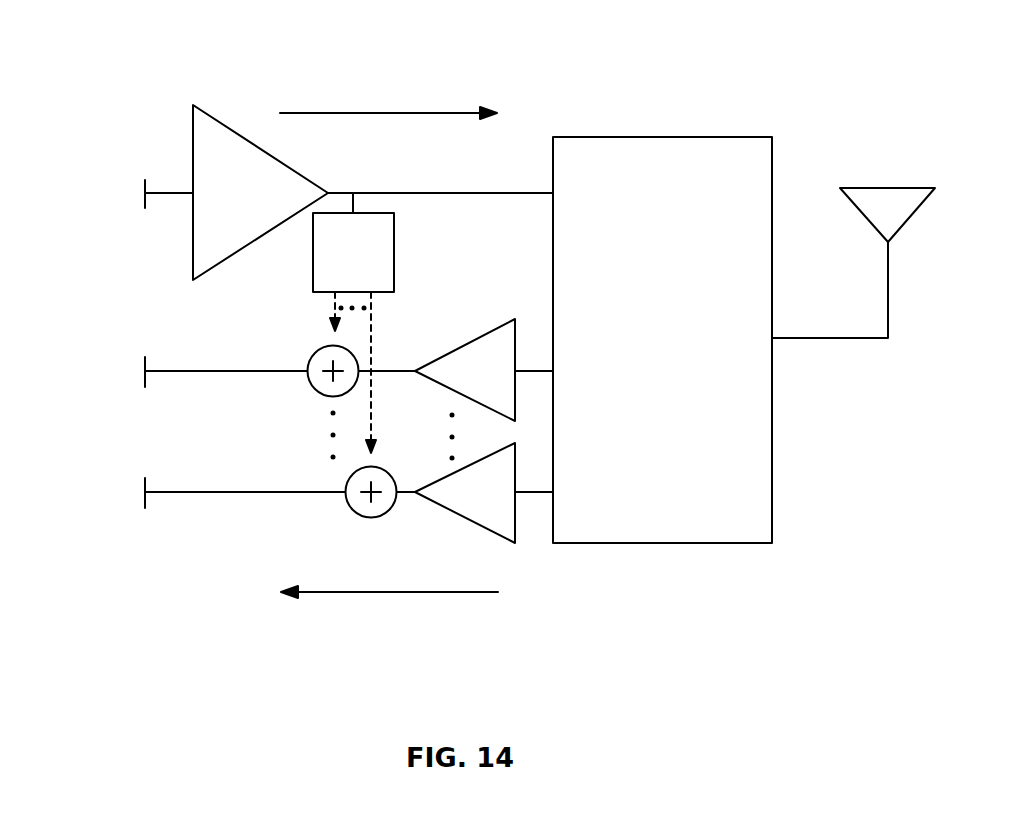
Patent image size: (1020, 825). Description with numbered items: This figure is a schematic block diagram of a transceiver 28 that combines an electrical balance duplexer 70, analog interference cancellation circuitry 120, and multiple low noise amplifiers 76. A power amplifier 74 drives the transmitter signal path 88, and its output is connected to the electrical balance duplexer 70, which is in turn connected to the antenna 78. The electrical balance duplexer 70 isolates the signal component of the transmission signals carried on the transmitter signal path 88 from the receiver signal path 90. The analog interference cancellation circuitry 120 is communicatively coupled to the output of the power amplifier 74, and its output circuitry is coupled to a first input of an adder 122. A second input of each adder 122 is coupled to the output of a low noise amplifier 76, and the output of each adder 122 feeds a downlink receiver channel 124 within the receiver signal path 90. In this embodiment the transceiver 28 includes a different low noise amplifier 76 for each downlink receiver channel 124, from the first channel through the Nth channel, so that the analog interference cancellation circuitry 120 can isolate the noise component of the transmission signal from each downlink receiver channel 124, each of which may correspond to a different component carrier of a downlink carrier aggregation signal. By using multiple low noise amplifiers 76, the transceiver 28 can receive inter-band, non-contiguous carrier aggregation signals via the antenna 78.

The transceiver 28 is at (104, 28).
The electrical balance duplexer 70 is at (742, 137).
The power amplifier 74 is at (268, 153).
The low noise amplifier 76 is at (466, 345).
The antenna 78 is at (888, 188).
The transmitter signal path 88 is at (388, 112).
The receiver signal path 90 is at (388, 592).
The analog interference cancellation circuitry 120 is at (394, 250).
The adder 122 is at (315, 390).
The downlink receiver channel 124 is at (215, 369).